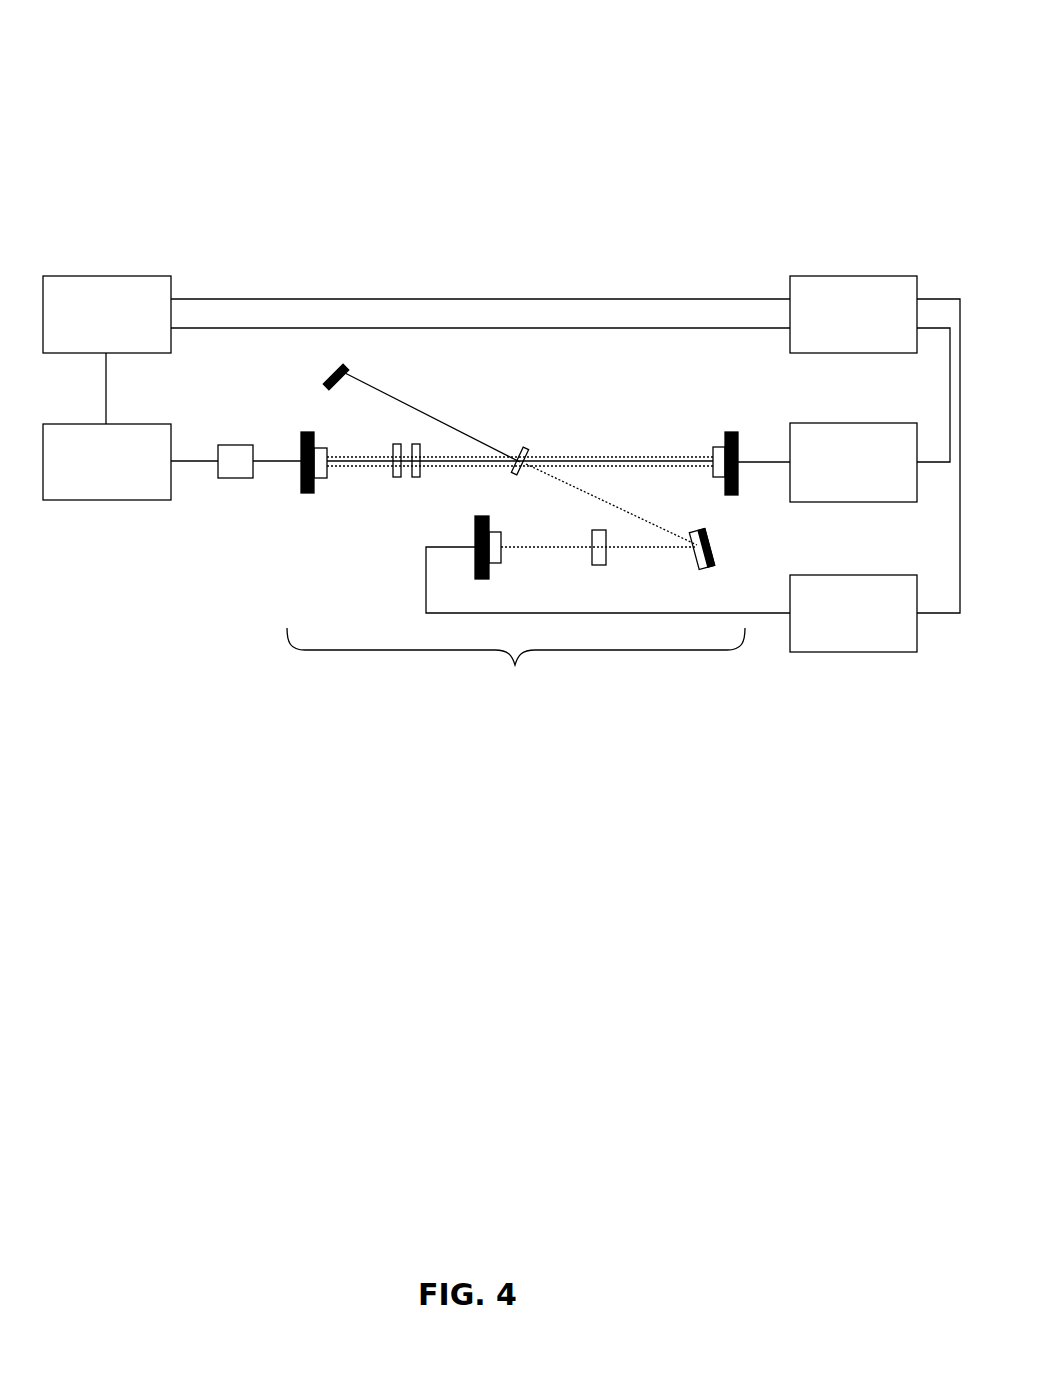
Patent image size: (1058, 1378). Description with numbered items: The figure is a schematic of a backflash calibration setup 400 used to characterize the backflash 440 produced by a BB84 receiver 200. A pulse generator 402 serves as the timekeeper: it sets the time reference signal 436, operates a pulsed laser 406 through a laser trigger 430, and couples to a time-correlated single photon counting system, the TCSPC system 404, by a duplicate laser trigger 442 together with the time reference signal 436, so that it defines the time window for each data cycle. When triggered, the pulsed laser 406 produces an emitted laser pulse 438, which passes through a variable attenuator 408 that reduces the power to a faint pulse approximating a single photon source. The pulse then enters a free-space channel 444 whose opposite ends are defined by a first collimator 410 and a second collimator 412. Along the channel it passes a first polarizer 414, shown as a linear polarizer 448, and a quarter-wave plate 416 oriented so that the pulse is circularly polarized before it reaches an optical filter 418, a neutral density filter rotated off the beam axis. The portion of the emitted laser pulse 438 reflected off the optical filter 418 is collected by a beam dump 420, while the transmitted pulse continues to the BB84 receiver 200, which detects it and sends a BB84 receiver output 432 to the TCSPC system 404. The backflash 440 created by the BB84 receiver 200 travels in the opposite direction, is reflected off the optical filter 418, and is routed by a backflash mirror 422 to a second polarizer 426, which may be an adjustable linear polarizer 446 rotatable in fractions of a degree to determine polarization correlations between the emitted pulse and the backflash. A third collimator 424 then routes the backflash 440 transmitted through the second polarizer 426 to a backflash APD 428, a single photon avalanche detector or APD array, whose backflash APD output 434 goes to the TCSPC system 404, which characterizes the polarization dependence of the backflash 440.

The backflash calibration setup 400 is at (844, 90).
The pulse generator 402 is at (126, 276).
The time-correlated single photon counting (TCSPC) system 404 is at (888, 276).
The pulsed laser 406 is at (91, 500).
The variable attenuator 408 is at (238, 478).
The first collimator 410 is at (309, 493).
The second collimator 412 is at (731, 495).
The first polarizer 414 is at (396, 482).
The quarter-wave plate 416 is at (419, 477).
The optical filter 418 is at (536, 443).
The beam dump 420 is at (345, 370).
The backflash mirror 422 is at (695, 566).
The third collimator 424 is at (482, 579).
The second polarizer 426 is at (598, 574).
The backflash APD 428 is at (815, 652).
The laser trigger 430 is at (105, 359).
The BB84 receiver output 432 is at (919, 462).
The backflash APD output 434 is at (921, 613).
The time reference signal 436 is at (718, 299).
The emitted laser pulse 438 is at (190, 461).
The backflash 440 is at (621, 502).
The duplicate laser trigger 442 is at (707, 328).
The free-space channel 444 is at (516, 660).
The adjustable linear polarizer 446 is at (592, 530).
The linear polarizer (π/4) 448 is at (393, 445).
The BB84 receiver 200 is at (842, 512).